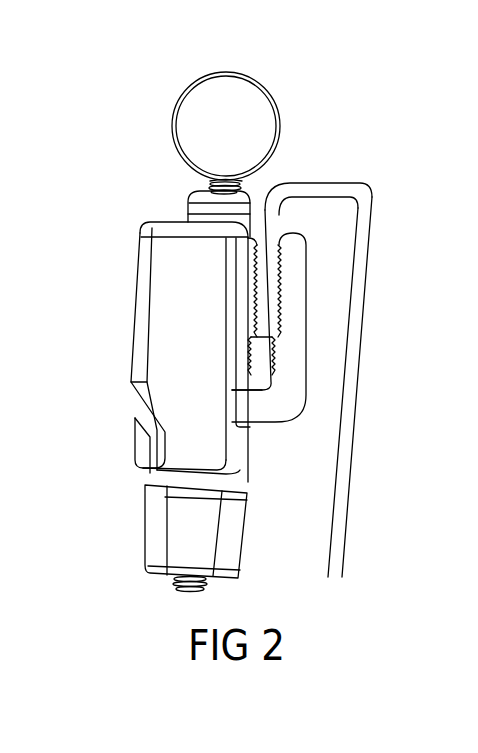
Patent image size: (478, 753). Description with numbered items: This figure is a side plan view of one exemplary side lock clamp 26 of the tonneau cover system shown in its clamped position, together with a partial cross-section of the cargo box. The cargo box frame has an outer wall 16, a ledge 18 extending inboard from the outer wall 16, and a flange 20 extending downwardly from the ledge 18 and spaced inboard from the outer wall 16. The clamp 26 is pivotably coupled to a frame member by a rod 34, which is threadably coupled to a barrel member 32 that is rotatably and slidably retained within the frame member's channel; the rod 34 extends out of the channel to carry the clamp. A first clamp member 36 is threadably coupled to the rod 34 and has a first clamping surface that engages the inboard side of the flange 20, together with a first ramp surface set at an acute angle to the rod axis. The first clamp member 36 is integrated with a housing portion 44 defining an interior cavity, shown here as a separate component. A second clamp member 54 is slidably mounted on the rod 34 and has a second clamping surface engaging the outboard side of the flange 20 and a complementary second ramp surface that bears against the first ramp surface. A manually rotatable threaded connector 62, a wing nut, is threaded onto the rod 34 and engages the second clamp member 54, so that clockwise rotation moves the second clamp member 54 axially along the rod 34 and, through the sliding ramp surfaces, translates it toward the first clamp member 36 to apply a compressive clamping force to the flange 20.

The outer wall 16 is at (353, 342).
The ledge 18 is at (323, 191).
The flange 20 is at (273, 218).
The side lock clamp 26 is at (280, 112).
The barrel member 32 is at (262, 130).
The rod 34 is at (208, 182).
The first clamp member 36 is at (138, 252).
The housing portion 44 is at (163, 356).
The second clamp member 54 is at (282, 423).
The threaded connector 62 is at (142, 545).